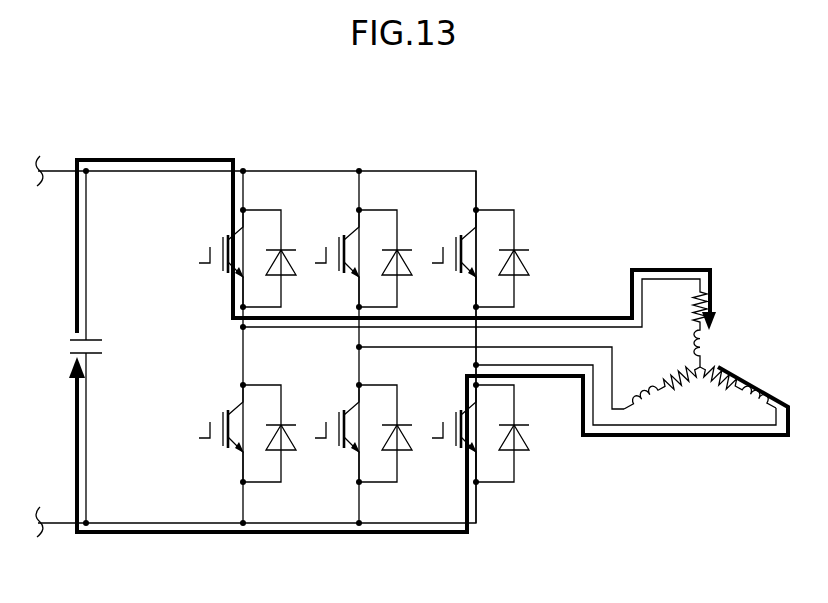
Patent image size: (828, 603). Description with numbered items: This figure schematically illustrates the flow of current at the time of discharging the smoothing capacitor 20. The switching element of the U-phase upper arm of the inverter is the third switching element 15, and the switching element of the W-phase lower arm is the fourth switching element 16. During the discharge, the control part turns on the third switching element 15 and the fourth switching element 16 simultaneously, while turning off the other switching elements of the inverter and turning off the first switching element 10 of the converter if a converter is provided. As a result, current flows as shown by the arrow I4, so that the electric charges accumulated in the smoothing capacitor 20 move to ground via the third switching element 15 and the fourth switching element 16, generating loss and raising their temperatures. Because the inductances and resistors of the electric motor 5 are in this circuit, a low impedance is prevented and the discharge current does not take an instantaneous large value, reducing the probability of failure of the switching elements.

The electric motor 5 is at (745, 321).
The first switching element 10 is at (345, 320).
The third switching element 15 is at (211, 224).
The fourth switching element 16 is at (442, 473).
The smoothing capacitor 20 is at (57, 349).
The arrow I4 is at (272, 537).